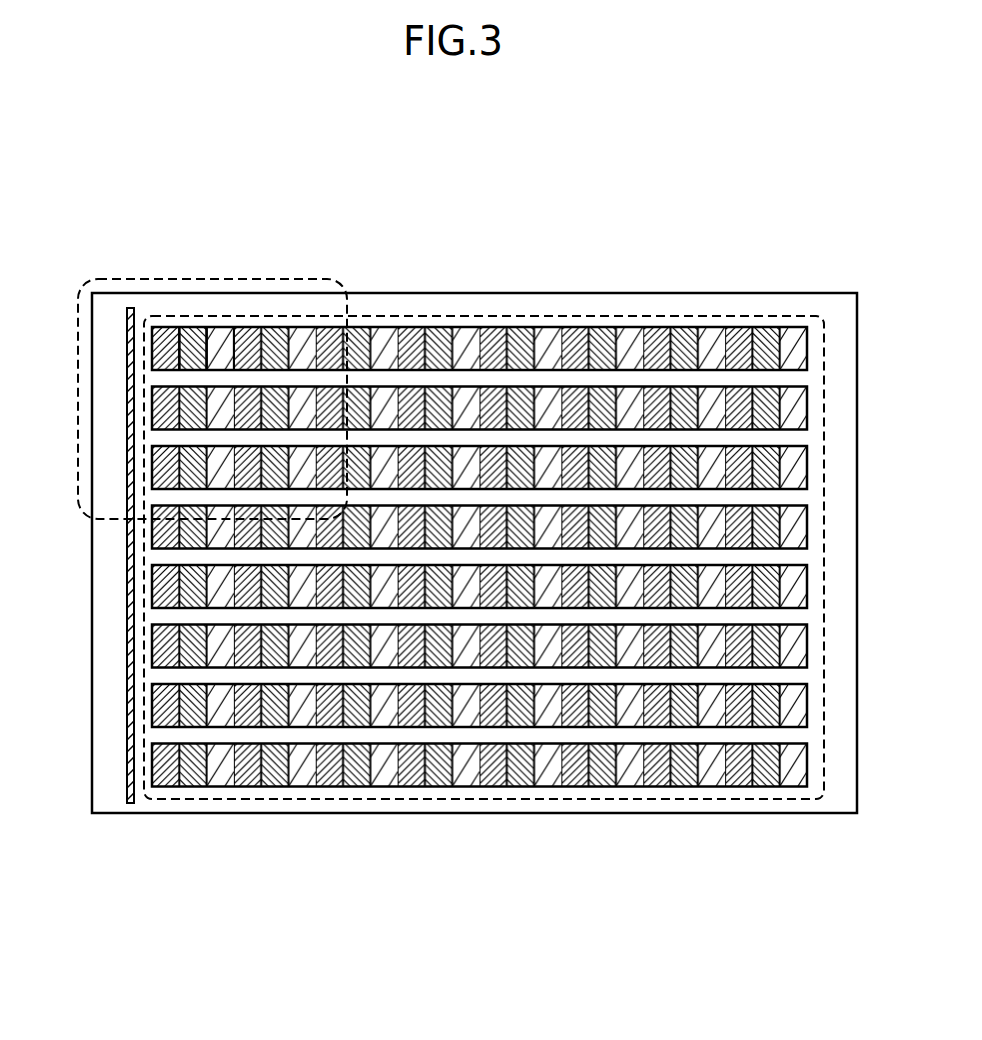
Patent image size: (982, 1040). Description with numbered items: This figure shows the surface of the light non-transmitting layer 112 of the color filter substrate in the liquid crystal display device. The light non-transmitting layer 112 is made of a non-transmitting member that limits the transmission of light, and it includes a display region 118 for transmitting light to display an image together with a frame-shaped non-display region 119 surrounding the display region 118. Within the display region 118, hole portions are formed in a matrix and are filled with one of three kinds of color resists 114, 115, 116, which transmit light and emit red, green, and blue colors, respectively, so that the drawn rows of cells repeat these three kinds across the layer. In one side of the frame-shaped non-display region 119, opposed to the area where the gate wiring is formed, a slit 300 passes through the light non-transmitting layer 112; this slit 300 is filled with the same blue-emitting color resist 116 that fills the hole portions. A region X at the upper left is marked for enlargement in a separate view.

The light non-transmitting layer 112 is at (702, 293).
The color resist 114 is at (160, 326).
The color resist 115 is at (192, 326).
The color resist 116 is at (220, 326).
The display region 118 is at (815, 337).
The non-display region 119 is at (792, 316).
The slit 300 is at (126, 783).
The region X is at (312, 278).